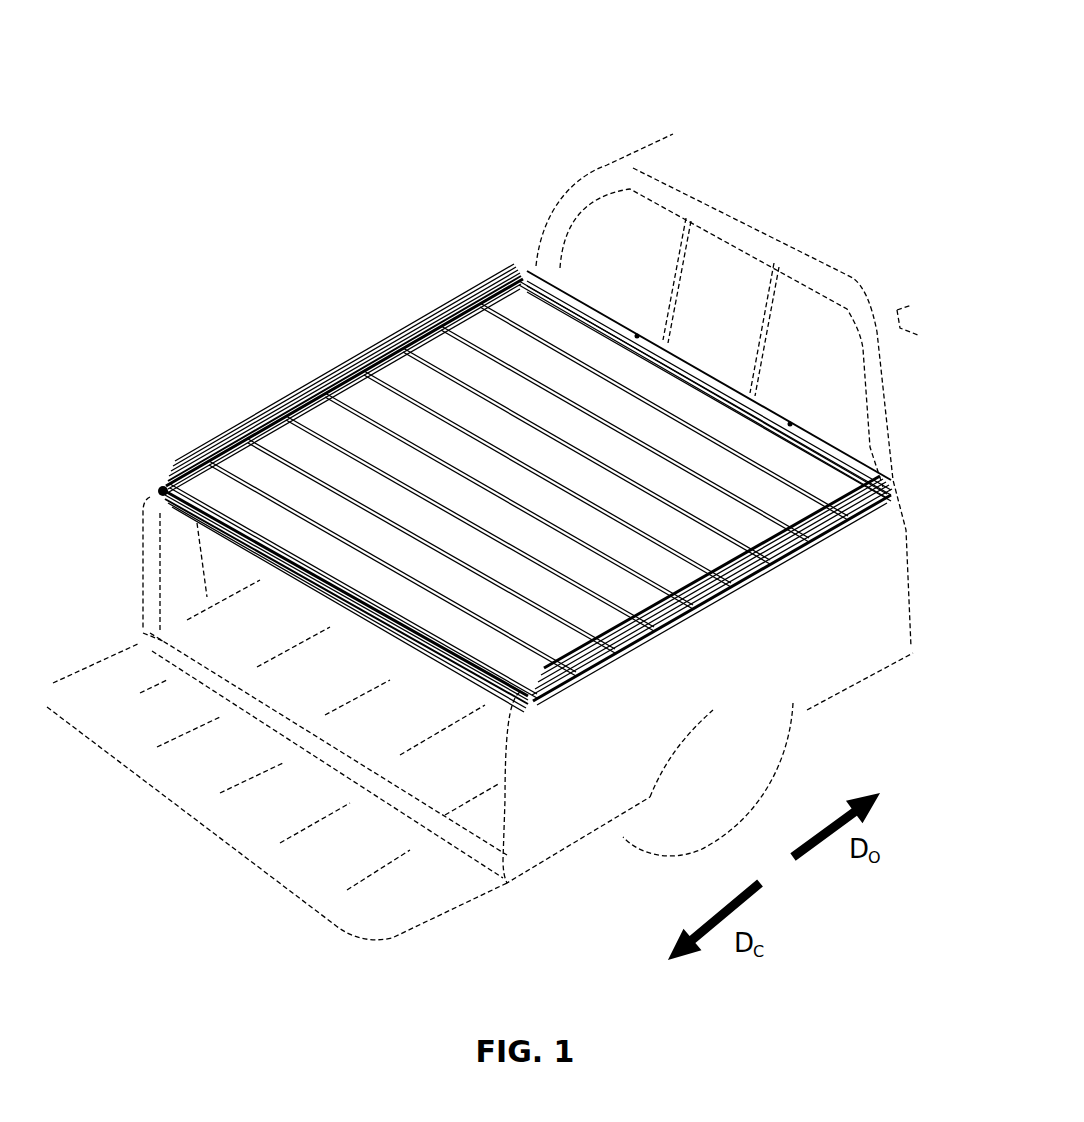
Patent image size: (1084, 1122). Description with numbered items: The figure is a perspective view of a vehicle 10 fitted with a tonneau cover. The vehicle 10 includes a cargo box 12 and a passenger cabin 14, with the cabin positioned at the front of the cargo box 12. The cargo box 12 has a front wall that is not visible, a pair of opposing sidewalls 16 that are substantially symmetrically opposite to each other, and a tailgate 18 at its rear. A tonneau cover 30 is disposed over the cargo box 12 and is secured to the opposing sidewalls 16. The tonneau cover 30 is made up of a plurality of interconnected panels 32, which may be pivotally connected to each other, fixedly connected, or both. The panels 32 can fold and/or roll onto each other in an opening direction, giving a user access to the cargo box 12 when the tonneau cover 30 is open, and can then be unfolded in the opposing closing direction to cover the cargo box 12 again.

The vehicle 10 is at (578, 82).
The cargo box 12 is at (438, 772).
The passenger cabin 14 is at (802, 327).
The sidewalls 16 is at (140, 587).
The tailgate 18 is at (317, 868).
The tonneau cover 30 is at (840, 486).
The panels 32 is at (524, 308).